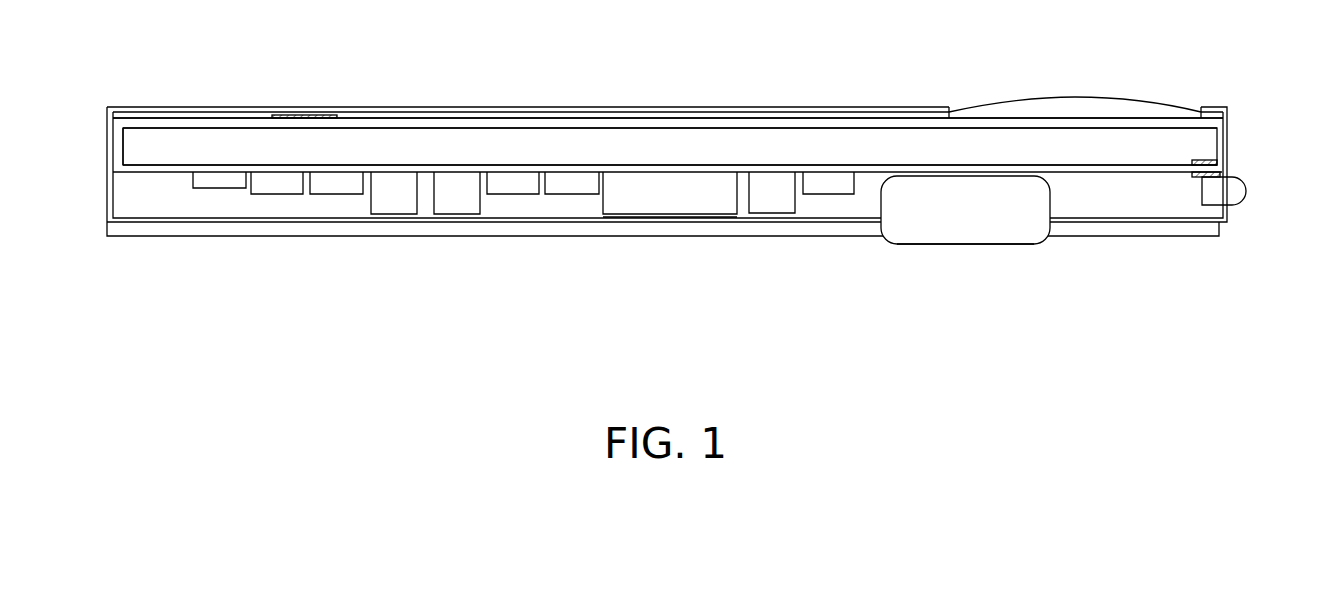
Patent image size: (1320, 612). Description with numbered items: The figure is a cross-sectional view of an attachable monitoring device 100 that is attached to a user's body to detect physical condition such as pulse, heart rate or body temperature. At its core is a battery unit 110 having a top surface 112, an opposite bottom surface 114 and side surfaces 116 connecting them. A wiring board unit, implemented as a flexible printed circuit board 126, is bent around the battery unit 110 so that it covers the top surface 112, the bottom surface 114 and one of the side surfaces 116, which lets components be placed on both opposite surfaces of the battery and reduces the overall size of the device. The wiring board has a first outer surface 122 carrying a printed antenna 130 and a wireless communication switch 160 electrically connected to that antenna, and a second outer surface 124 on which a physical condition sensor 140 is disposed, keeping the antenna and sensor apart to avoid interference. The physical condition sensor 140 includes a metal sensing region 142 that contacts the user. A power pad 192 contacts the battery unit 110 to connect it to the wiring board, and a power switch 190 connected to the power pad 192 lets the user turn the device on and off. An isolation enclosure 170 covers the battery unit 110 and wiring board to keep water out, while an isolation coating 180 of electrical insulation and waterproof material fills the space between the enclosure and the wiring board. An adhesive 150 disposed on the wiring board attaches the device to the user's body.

The attachable monitoring device 100 is at (671, 211).
The battery unit 110 is at (551, 143).
The top surface 112 is at (431, 120).
The bottom surface 114 is at (431, 173).
The side surfaces 116 is at (114, 153).
The first outer surface 122 is at (816, 110).
The second outer surface 124 is at (747, 180).
The flexible printed circuit board 126 is at (669, 123).
The printed antenna 130 is at (309, 112).
The physical condition sensor 140 is at (950, 255).
The sensing region 142 is at (962, 245).
The adhesive 150 is at (190, 233).
The wireless communication switch 160 is at (1060, 103).
The isolation enclosure 170 is at (108, 202).
The isolation coating 180 is at (257, 210).
The power switch 190 is at (1222, 192).
The power pad 192 is at (1200, 160).